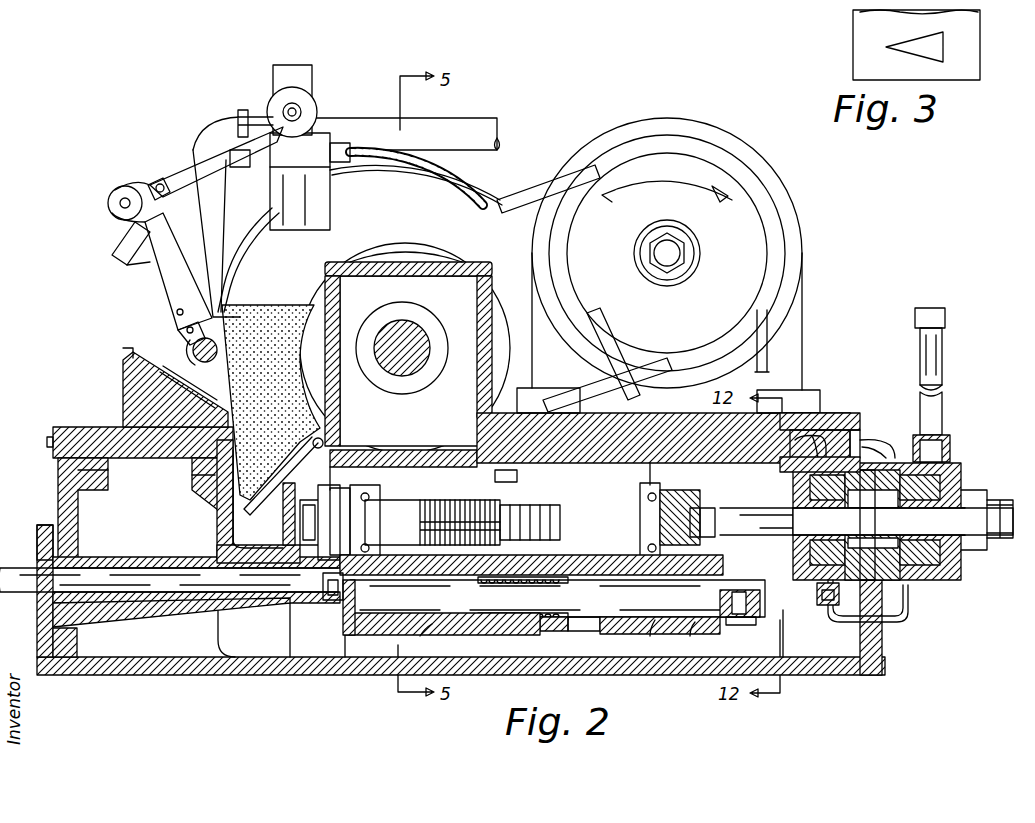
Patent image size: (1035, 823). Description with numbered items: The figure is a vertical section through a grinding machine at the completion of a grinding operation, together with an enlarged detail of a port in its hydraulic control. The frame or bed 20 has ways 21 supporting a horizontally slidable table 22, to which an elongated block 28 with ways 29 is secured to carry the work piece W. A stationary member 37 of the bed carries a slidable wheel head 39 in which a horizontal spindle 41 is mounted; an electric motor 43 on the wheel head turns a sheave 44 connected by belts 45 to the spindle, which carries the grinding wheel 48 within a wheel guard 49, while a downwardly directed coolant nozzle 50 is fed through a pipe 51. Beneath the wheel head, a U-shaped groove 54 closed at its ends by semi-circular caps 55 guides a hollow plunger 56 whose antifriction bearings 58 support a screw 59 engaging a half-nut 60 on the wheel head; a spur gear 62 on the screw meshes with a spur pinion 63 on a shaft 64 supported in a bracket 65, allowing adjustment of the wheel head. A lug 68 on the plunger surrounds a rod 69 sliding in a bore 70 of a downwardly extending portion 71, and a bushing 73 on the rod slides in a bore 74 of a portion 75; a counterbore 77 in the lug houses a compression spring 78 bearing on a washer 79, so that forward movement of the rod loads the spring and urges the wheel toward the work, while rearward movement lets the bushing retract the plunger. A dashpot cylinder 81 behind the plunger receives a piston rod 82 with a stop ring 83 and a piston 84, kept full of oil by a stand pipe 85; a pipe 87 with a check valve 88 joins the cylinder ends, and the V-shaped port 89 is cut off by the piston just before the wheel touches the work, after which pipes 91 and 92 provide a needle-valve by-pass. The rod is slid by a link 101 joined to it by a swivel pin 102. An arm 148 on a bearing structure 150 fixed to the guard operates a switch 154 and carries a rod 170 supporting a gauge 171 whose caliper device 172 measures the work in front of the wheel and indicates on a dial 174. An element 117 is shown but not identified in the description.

In FIG. 2, the frame or bed 20 is at (158, 666).
In FIG. 2, the ways 21 is at (192, 478).
In FIG. 2, the table 22 is at (72, 426).
In FIG. 2, the elongated block 28 is at (143, 402).
In FIG. 2, the ways 29 is at (124, 352).
In FIG. 2, the stationary member 37 is at (720, 582).
In FIG. 2, the wheel head 39 is at (490, 435).
In FIG. 2, the spindle 41 is at (420, 330).
In FIG. 2, the electric motor 43 is at (665, 126).
In FIG. 2, the sheave 44 is at (667, 253).
In FIG. 2, the belts 45 is at (530, 198).
In FIG. 2, the grinding wheel 48 is at (262, 490).
In FIG. 2, the wheel guard 49 is at (271, 388).
In FIG. 2, the coolant nozzle 50 is at (242, 275).
In FIG. 2, the pipe 51 is at (478, 118).
In FIG. 2, the groove 54 is at (715, 560).
In FIG. 2, the semi-circular caps 55 is at (395, 480).
In FIG. 2, the plunger 56 is at (668, 440).
In FIG. 2, the antifriction bearings 58 is at (618, 440).
In FIG. 2, the screw 59 is at (440, 498).
In FIG. 2, the half-nut 60 is at (500, 495).
In FIG. 2, the spur gear 62 is at (298, 535).
In FIG. 2, the spur pinion 63 is at (333, 600).
In FIG. 2, the shaft 64 is at (168, 590).
In FIG. 2, the bracket 65 is at (37, 545).
In FIG. 2, the lug 68 is at (482, 620).
In FIG. 2, the rod 69 is at (635, 622).
In FIG. 2, the bore 70 is at (651, 639).
In FIG. 2, the downwardly extending portion 71 is at (693, 640).
In FIG. 2, the bushing 73 is at (433, 641).
In FIG. 2, the bore 74 is at (345, 630).
In FIG. 2, the downwardly extending portion 75 is at (395, 630).
In FIG. 2, the counterbore 77 is at (522, 621).
In FIG. 2, the compression spring 78 is at (552, 624).
In FIG. 2, the washer 79 is at (586, 622).
In FIG. 2, the cylinder 81 is at (932, 582).
In FIG. 3, the cylinder 81 is at (968, 50).
In FIG. 2, the piston rod 82 is at (760, 515).
In FIG. 2, the ring or washer 83 is at (980, 552).
In FIG. 2, the piston 84 is at (870, 540).
In FIG. 2, the stand pipe 85 is at (940, 372).
In FIG. 2, the pipe 87 is at (905, 625).
In FIG. 2, the check valve 88 is at (812, 595).
In FIG. 2, the port 89 is at (855, 428).
In FIG. 3, the port 89 is at (915, 36).
In FIG. 2, the pipe 91 is at (838, 414).
In FIG. 2, the pipe 92 is at (888, 440).
In FIG. 2, the link 101 is at (765, 600).
In FIG. 2, the swivel pin 102 is at (745, 625).
In FIG. 2, the guard strip 117 is at (770, 365).
In FIG. 2, the arm or lever 148 is at (178, 175).
In FIG. 2, the bearing structure 150 is at (285, 80).
In FIG. 2, the electrical switch 154 is at (325, 140).
In FIG. 2, the rod 170 is at (158, 178).
In FIG. 2, the gauge 171 is at (177, 282).
In FIG. 2, the caliper device 172 is at (196, 350).
In FIG. 2, the dial 174 is at (113, 242).
In FIG. 2, the work piece W is at (188, 348).